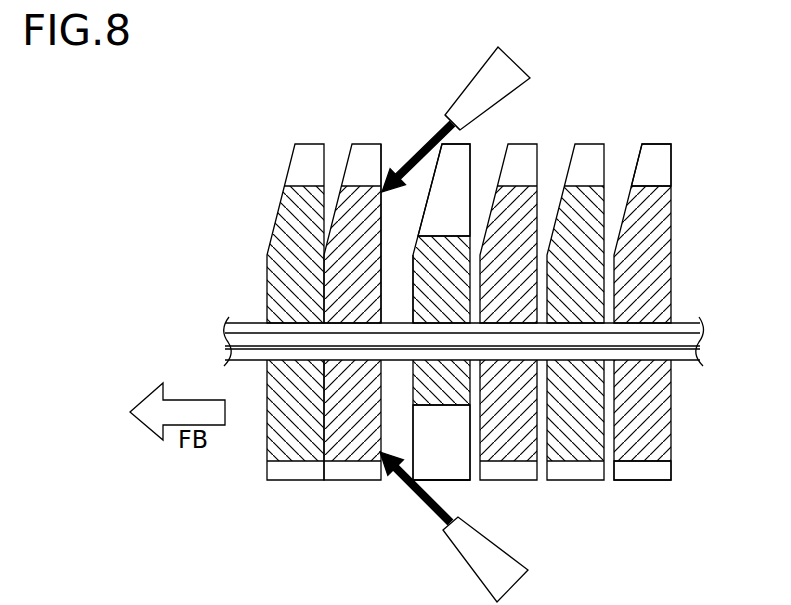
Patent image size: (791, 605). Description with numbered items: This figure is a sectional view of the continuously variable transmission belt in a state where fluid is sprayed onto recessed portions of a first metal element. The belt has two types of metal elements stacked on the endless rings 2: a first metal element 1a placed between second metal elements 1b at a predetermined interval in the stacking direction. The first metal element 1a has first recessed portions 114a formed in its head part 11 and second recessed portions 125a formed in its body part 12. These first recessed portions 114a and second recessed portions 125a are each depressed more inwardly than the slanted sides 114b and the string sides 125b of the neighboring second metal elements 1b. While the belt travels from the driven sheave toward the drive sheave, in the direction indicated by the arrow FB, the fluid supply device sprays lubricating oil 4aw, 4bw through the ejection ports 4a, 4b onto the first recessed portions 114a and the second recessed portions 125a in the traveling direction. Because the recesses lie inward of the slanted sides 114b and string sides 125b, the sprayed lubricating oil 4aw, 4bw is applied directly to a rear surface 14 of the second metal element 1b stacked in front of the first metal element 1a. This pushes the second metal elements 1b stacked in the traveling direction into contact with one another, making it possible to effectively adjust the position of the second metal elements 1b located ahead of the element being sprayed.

The first metal element 1a is at (478, 140).
The second metal element 1b is at (347, 486).
The endless ring 2 is at (683, 324).
The ejection port 4a is at (470, 565).
The ejection port 4b is at (510, 64).
The fluid (lubricating oil) 4aw is at (420, 509).
The fluid (lubricating oil) 4bw is at (422, 143).
The head part 11 is at (444, 481).
The body part 12 is at (458, 126).
The rear surface 14 is at (383, 273).
The first recessed portion 114a is at (440, 406).
The slanted side 114b is at (634, 463).
The second recessed portion 125a is at (447, 236).
The string side 125b is at (650, 186).